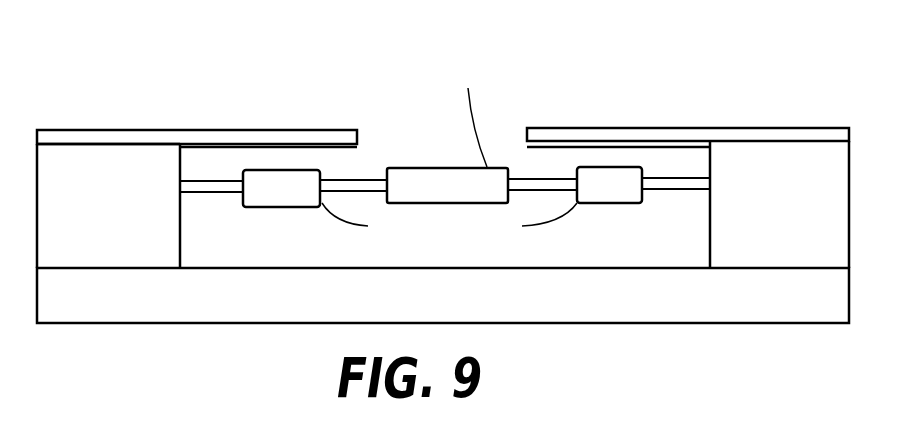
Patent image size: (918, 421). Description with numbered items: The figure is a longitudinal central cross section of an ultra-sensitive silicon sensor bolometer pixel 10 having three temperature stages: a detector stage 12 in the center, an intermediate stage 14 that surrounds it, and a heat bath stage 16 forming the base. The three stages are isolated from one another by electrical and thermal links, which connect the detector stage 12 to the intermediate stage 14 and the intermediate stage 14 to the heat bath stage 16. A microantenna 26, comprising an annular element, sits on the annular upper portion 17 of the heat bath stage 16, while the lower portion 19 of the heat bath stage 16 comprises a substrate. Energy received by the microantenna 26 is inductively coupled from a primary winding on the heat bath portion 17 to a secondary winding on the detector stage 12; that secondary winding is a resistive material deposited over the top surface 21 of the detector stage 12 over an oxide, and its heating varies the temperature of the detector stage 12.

The bolometer pixel 10 is at (320, 66).
The detector stage 12 is at (452, 118).
The intermediate stage 14 is at (292, 207).
The heat bath stage 16 is at (443, 332).
The annular upper portion 17 is at (182, 243).
The lower portion 19 is at (765, 324).
The top surface 21 is at (452, 167).
The microantenna 26 is at (347, 129).